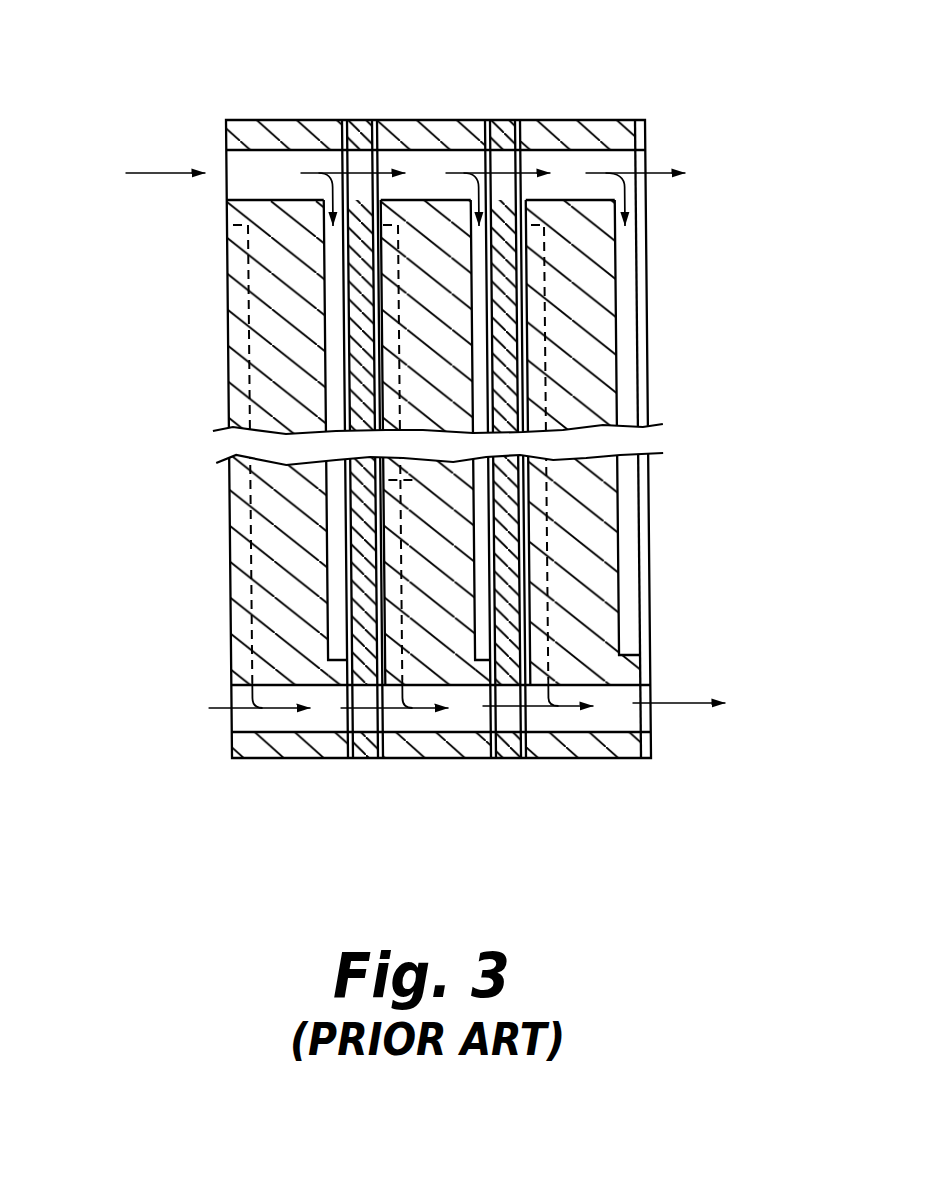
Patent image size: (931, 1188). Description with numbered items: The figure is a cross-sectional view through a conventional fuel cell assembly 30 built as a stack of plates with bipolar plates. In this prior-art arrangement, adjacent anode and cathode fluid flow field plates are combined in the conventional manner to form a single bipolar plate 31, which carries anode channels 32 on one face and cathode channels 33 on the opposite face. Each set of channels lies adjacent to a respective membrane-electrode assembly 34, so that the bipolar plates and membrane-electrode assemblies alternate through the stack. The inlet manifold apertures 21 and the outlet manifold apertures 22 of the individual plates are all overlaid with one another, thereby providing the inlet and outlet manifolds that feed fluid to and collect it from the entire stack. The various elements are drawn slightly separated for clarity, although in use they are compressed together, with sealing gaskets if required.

The fuel cell assembly 30 is at (229, 104).
The bipolar plate 31 is at (286, 141).
The anode channels 32 is at (480, 331).
The cathode channels 33 is at (540, 396).
The membrane-electrode assembly 34 is at (353, 138).
The inlet manifold apertures 21 is at (133, 168).
The outlet manifold apertures 22 is at (725, 692).